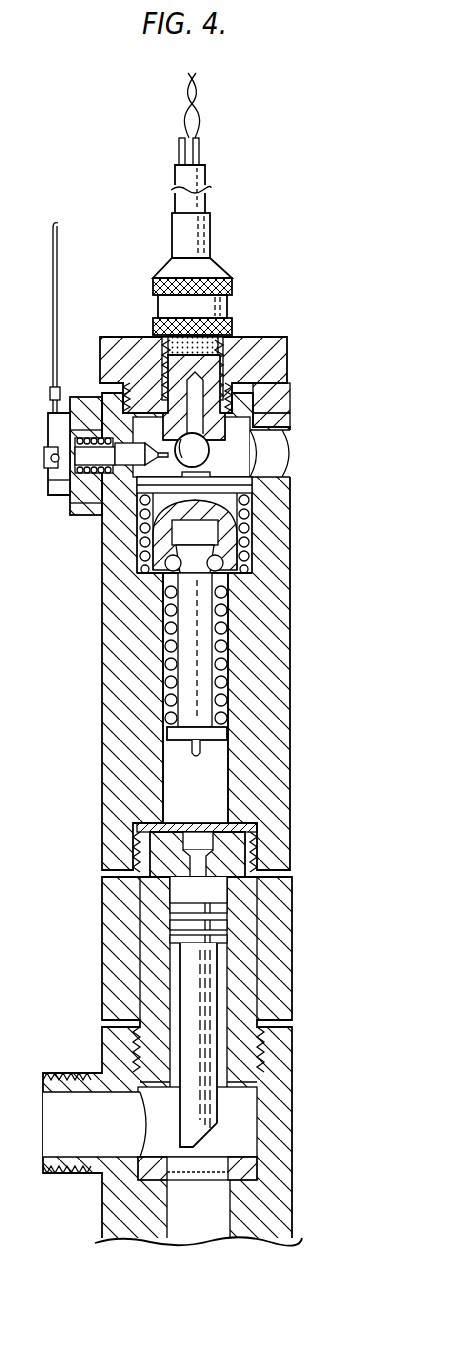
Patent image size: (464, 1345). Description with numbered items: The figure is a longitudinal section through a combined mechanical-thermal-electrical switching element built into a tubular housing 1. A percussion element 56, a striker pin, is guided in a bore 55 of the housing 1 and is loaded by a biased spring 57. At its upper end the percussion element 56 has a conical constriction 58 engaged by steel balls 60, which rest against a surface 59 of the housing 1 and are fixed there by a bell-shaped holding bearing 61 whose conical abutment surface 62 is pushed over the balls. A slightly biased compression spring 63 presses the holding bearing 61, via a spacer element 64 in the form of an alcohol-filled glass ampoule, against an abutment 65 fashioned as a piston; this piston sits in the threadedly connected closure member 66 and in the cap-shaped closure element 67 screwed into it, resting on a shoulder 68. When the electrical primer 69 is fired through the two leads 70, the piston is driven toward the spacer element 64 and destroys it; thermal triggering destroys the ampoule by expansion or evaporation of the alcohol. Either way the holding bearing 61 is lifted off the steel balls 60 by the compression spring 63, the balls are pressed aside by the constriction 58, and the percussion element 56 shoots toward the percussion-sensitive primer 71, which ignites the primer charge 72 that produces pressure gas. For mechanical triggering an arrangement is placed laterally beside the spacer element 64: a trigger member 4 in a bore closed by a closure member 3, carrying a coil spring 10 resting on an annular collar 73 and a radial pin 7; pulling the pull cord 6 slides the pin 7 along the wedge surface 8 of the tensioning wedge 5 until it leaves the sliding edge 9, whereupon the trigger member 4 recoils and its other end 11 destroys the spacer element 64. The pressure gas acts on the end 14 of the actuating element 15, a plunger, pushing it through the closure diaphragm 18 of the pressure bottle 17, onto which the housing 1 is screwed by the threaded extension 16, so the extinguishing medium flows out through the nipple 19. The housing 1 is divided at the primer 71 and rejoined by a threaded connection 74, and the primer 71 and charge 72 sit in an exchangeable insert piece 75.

The tubular housing 1 is at (268, 718).
The closure member 3 is at (105, 430).
The trigger member 4 is at (80, 453).
The tensioning wedge 5 is at (70, 445).
The pull cord 6 is at (52, 297).
The radial pin 7 is at (44, 459).
The wedge surface 8 is at (50, 477).
The sliding edge 9 is at (50, 493).
The coil spring 10 is at (78, 503).
The other end 11 is at (192, 750).
The end 14 is at (227, 925).
The actuating element 15 is at (203, 983).
The threaded extension 16 is at (257, 1057).
The pressure bottle 17 is at (250, 1218).
The closure diaphragm 18 is at (213, 1173).
The nipple 19 is at (65, 1130).
The bore 55 is at (205, 788).
The percussion element 56 is at (197, 660).
The biased spring 57 is at (223, 617).
The conical constriction 58 is at (202, 550).
The surface 59 is at (150, 577).
The steel balls 60 is at (220, 570).
The holding bearing 61 is at (223, 513).
The conical abutment surface 62 is at (240, 557).
The compression spring 63 is at (152, 530).
The spacer element 64 is at (195, 449).
The abutment 65 is at (215, 427).
The closure member 66 is at (268, 366).
The cap-shaped closure element 67 is at (228, 326).
The shoulder 68 is at (250, 407).
The electrical primer 69 is at (195, 347).
The leads 70 is at (199, 156).
The percussion-sensitive primer 71 is at (190, 840).
The primer charge 72 is at (190, 890).
The annular collar 73 is at (95, 433).
The threaded connection 74 is at (250, 831).
The insert piece 75 is at (223, 868).